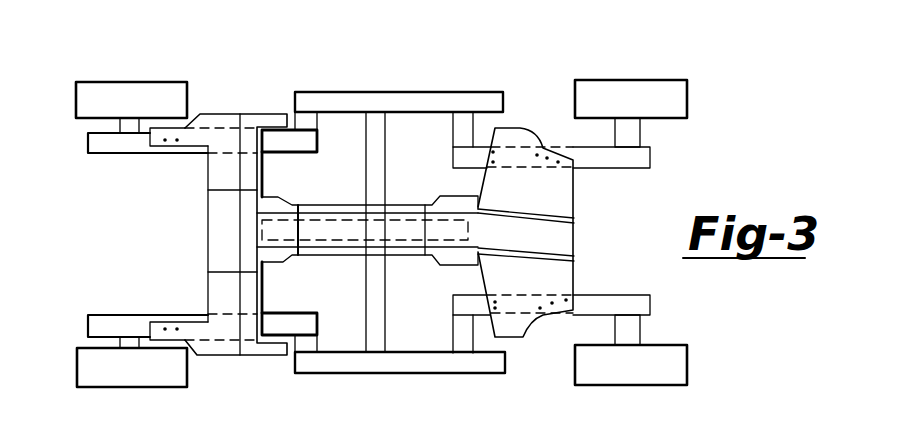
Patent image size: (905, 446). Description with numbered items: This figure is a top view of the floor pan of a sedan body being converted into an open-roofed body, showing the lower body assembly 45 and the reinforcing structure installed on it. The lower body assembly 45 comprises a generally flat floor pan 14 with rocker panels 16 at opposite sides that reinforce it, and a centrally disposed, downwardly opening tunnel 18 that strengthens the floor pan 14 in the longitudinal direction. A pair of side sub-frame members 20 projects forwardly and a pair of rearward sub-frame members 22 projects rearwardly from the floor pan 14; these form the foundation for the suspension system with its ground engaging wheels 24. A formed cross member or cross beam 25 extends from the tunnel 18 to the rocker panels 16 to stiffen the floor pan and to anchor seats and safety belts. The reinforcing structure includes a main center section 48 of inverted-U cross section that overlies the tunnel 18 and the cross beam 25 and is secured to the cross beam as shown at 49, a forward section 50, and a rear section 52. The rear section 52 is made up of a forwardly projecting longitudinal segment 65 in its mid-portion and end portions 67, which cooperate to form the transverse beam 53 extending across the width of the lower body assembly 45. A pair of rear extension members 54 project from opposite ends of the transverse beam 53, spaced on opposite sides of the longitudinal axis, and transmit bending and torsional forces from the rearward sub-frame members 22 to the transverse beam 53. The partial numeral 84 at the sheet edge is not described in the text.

The floor pan 14 is at (418, 123).
The rocker panels 16 is at (399, 92).
The tunnel 18 is at (398, 255).
The side sub-frame members 20 is at (623, 160).
The rearward sub-frame members 22 is at (103, 147).
The ground engaging wheels 24 is at (675, 113).
The cross member or cross beam 25 is at (365, 168).
The lower body assembly 45 is at (532, 97).
The main center section 48 is at (437, 165).
The securement of center section to cross beam 49 is at (377, 208).
The forward section 50 is at (574, 200).
The rear section 52 is at (222, 227).
The transverse beam 53 is at (198, 252).
The rear extension members 54 is at (218, 121).
The longitudinal segment 65 is at (257, 223).
The end portions 67 is at (218, 165).
The reference (partial) 84 is at (441, 440).